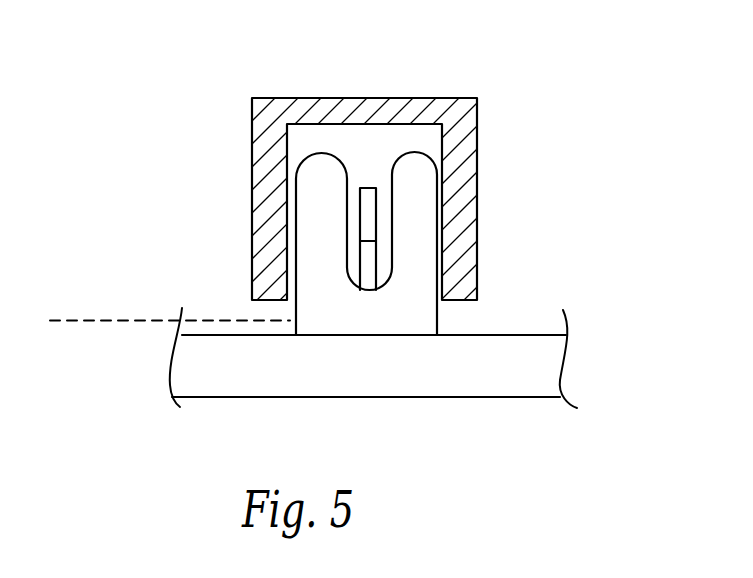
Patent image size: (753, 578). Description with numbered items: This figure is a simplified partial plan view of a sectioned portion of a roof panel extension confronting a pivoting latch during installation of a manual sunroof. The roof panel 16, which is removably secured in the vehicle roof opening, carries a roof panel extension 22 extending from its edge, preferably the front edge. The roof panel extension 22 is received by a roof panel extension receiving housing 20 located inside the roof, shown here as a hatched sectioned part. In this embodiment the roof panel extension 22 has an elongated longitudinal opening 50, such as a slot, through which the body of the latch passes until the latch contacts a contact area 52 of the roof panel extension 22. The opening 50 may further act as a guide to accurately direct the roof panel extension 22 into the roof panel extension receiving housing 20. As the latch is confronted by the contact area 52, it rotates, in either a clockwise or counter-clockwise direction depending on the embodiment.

The roof panel 16 is at (505, 376).
The roof panel extension receiving housing 20 is at (452, 98).
The roof panel extension 22 is at (305, 312).
The elongated longitudinal opening 50 is at (377, 179).
The contact area 52 is at (366, 291).